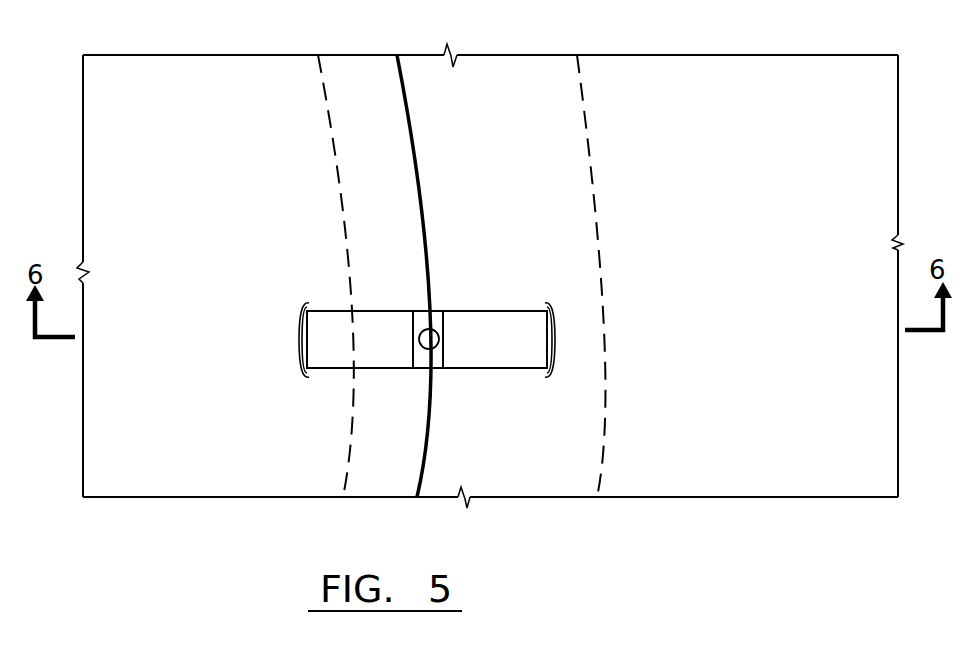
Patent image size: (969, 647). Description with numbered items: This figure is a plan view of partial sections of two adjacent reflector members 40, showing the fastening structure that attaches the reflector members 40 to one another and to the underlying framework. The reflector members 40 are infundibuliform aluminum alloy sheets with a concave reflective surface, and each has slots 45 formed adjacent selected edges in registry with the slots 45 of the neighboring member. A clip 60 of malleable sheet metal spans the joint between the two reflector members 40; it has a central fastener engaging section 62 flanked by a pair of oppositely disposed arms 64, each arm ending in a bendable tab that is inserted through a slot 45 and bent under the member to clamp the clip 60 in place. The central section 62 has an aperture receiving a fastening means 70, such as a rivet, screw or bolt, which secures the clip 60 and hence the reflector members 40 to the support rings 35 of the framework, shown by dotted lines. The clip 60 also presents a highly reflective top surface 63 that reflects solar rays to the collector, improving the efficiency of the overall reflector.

The support ring 35 is at (561, 54).
The reflector member 40 is at (264, 174).
The slot 45 is at (297, 333).
The clip 60 is at (508, 303).
The central fastener engaging section 62 is at (425, 319).
The reflective top surface 63 is at (530, 357).
The arm 64 is at (333, 331).
The fastening means 70 is at (431, 348).